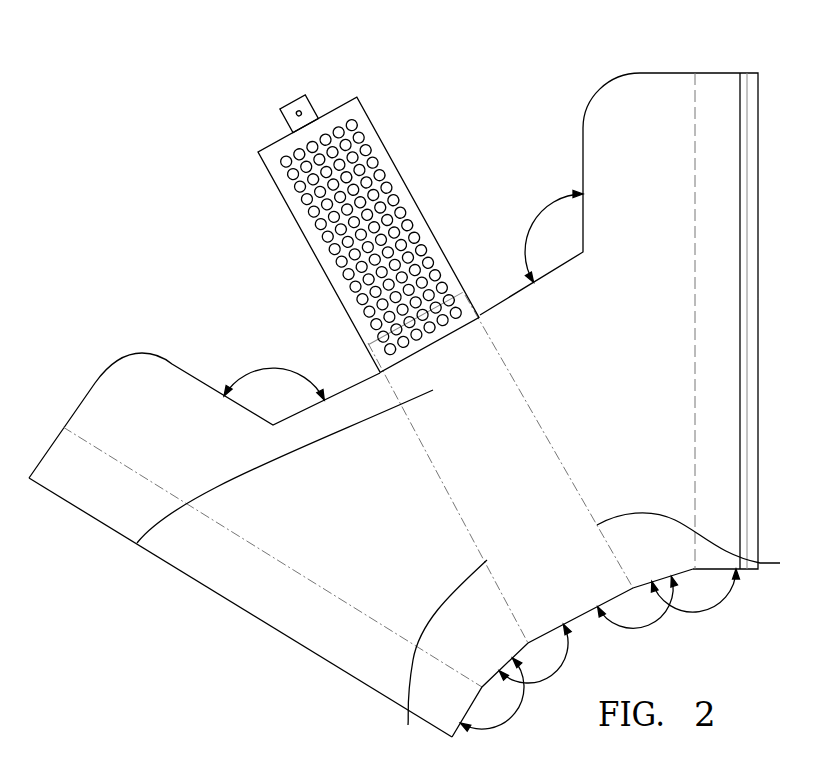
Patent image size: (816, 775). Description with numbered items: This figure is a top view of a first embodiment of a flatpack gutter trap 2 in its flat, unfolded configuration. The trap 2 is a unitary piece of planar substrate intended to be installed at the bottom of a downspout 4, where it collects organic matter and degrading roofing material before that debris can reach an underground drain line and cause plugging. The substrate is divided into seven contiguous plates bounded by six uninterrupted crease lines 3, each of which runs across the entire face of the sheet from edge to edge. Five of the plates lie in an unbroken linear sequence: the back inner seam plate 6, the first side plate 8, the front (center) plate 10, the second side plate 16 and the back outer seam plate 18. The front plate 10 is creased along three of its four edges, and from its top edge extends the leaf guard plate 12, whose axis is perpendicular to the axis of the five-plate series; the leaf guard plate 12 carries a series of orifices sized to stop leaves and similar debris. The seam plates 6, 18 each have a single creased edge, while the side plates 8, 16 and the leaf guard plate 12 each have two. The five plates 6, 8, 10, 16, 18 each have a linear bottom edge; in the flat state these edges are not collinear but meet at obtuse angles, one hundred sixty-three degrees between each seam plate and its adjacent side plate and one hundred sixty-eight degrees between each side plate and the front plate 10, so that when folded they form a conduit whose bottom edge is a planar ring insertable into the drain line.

The flatpack gutter trap 2 is at (160, 226).
The crease lines 3 is at (88, 443).
The downspout 4 is at (302, 102).
The back inner seam plate 6 is at (240, 590).
The first side plate 8 is at (363, 582).
The front (center) plate 10 is at (137, 543).
The leaf guard plate 12 is at (362, 207).
The second side plate 16 is at (598, 105).
The back outer seam plate 18 is at (714, 87).